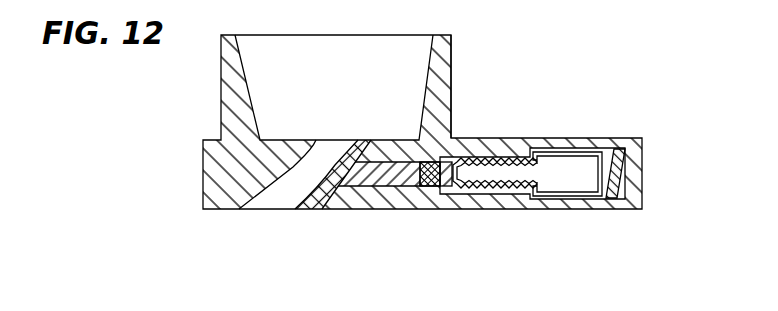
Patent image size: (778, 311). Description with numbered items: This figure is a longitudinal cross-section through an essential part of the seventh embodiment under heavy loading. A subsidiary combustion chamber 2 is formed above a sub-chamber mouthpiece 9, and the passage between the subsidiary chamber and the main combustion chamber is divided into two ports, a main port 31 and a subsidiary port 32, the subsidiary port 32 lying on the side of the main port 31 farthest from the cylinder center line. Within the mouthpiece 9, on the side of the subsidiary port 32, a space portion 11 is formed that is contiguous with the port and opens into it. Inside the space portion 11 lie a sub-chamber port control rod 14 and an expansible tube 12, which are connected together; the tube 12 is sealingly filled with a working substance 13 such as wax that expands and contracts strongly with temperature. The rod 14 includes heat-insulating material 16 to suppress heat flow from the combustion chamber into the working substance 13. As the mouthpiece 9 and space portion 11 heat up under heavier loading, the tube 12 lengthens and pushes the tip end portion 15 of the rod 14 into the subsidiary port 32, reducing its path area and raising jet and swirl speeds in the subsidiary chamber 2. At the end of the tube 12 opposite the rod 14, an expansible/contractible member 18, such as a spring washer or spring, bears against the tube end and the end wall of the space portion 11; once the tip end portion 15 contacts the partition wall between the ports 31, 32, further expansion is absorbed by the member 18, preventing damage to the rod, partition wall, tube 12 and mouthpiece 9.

The subsidiary combustion chamber 2 is at (427, 43).
The sub-chamber mouthpiece 9 is at (446, 63).
The main port 31 is at (268, 196).
The tip end portion 15 is at (341, 187).
The subsidiary port 32 is at (355, 190).
The sub-chamber port control rod 14 is at (399, 181).
The heat-insulating material 16 is at (428, 186).
The expansible tube 12 is at (490, 200).
The space portion 11 is at (509, 194).
The working substance 13 is at (578, 186).
The expansible/contractible member 18 is at (620, 162).